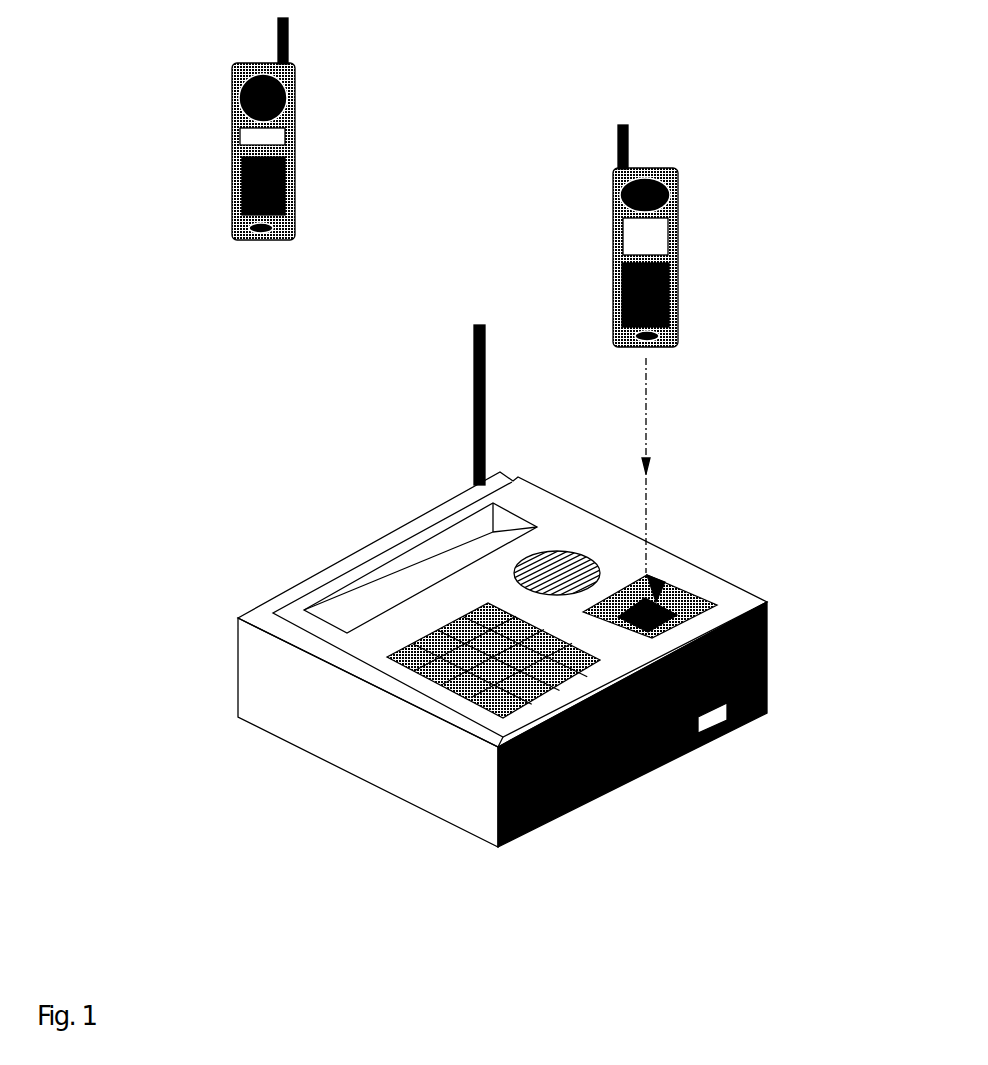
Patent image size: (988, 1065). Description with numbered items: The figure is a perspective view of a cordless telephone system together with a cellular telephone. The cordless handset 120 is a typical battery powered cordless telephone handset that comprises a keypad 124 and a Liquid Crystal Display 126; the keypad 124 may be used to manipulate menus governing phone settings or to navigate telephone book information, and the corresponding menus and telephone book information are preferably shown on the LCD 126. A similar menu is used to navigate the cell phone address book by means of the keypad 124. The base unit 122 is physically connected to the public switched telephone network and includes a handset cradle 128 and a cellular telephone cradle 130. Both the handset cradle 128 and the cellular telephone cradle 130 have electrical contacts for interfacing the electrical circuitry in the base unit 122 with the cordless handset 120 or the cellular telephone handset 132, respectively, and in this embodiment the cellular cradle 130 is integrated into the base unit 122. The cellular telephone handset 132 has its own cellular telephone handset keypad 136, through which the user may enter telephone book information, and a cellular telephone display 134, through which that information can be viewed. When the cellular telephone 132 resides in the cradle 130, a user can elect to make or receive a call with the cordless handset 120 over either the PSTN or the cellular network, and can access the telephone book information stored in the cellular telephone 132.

The cordless handset 120 is at (255, 162).
The base unit 122 is at (563, 586).
The keypad 124 is at (242, 170).
The Liquid Crystal Display (LCD) 126 is at (285, 135).
The handset cradle 128 is at (423, 560).
The cellular telephone cradle 130 is at (700, 600).
The cellular telephone handset 132 is at (652, 236).
The cellular telephone display 134 is at (635, 225).
The cellular telephone handset keypad 136 is at (675, 277).